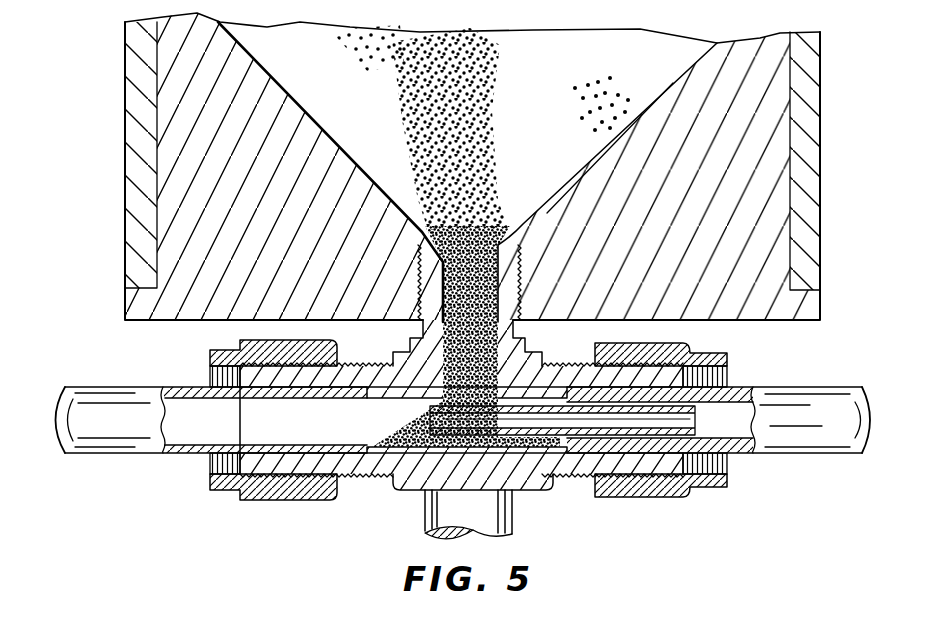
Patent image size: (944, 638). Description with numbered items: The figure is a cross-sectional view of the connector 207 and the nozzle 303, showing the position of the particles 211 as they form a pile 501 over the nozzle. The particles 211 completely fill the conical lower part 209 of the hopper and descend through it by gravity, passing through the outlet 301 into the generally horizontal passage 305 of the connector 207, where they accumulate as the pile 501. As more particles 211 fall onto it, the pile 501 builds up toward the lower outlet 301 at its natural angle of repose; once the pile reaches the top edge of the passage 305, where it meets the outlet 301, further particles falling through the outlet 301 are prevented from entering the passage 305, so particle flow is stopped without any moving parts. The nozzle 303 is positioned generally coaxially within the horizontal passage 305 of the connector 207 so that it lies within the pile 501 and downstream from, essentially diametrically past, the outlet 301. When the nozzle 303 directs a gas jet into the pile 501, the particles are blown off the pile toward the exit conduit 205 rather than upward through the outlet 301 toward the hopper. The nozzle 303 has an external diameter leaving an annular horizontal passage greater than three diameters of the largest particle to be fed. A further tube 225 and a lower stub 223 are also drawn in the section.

The conical lower part 209 is at (297, 103).
The particles 211 is at (610, 108).
The outlet 301 is at (503, 246).
The pile 501 is at (378, 438).
The nozzle 303 is at (450, 442).
The horizontal passage 305 is at (548, 446).
The exit conduit 205 is at (135, 387).
The connector 207 is at (706, 351).
The outlet tube 225 is at (808, 387).
The lower stub tube 223 is at (423, 508).